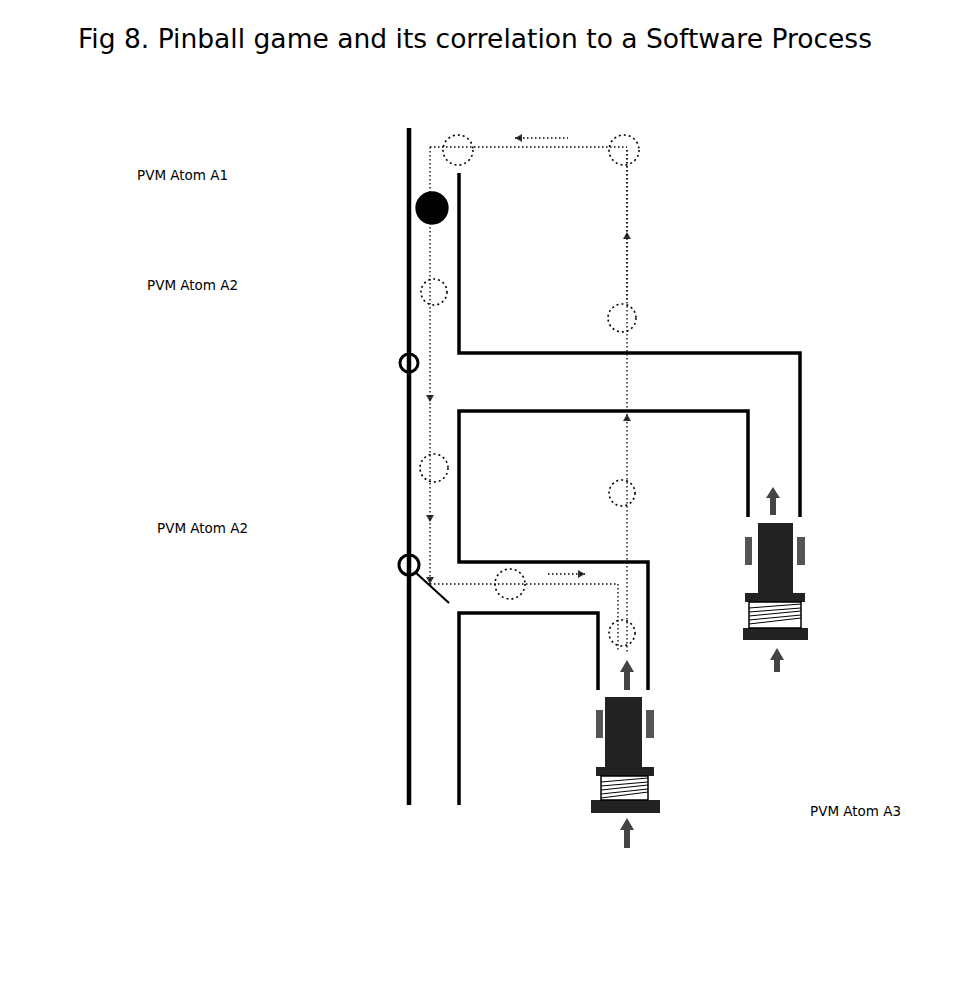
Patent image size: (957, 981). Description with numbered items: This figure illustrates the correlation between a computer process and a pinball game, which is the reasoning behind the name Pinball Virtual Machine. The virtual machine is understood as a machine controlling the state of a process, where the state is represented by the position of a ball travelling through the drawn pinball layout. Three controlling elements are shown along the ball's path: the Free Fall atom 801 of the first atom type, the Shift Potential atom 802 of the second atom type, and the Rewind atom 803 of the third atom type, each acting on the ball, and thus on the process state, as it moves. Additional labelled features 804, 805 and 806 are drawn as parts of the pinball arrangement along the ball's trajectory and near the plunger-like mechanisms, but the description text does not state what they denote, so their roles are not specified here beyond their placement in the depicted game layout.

The Free Fall atom 801 is at (406, 210).
The Shift Potential atom 802 is at (378, 332).
The Rewind atom 803 is at (386, 560).
The ball trajectory path 804 is at (633, 213).
The ball position on trajectory 805 is at (640, 310).
The PVM Atom A3 (plunger) 806 is at (728, 672).